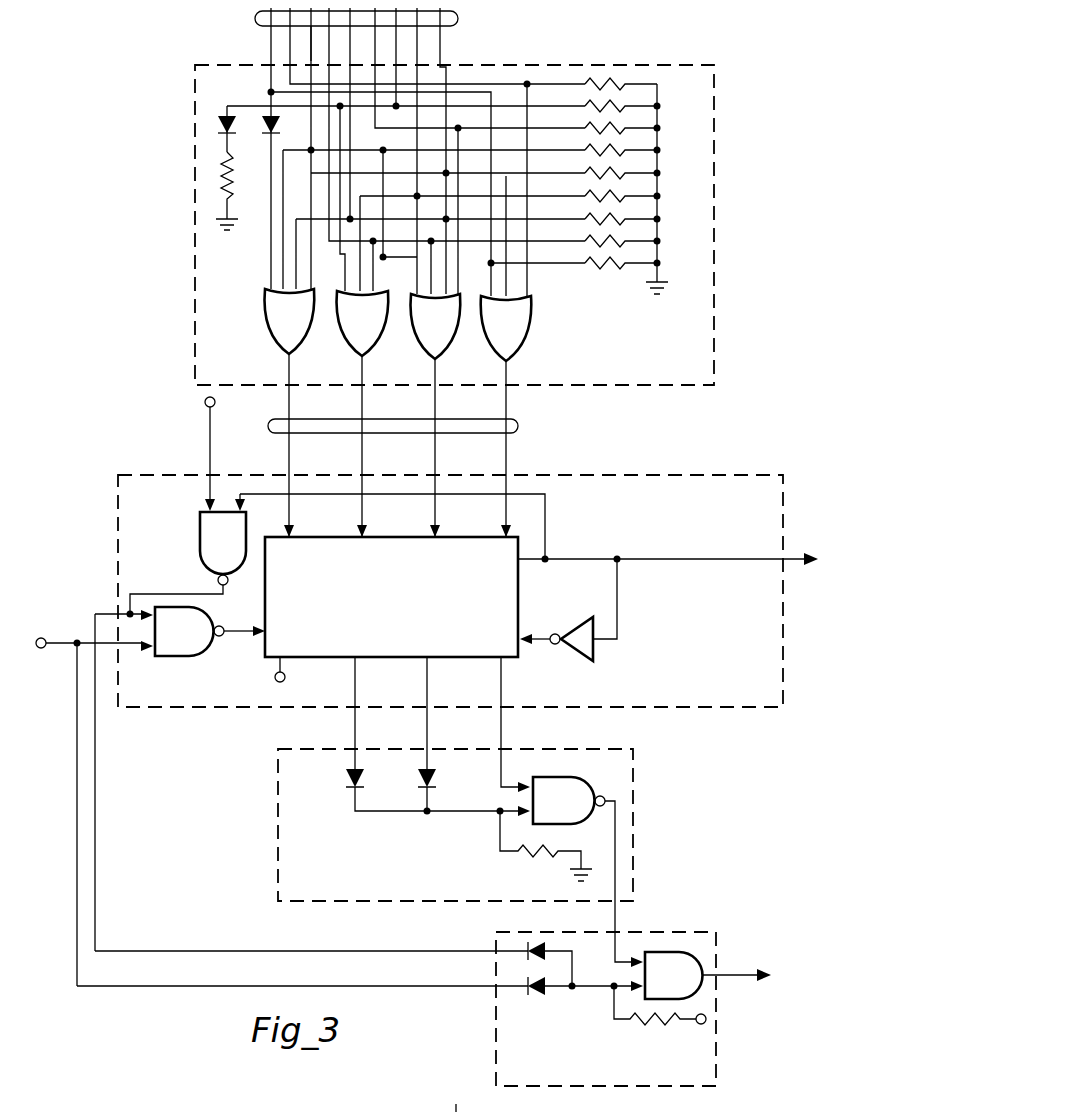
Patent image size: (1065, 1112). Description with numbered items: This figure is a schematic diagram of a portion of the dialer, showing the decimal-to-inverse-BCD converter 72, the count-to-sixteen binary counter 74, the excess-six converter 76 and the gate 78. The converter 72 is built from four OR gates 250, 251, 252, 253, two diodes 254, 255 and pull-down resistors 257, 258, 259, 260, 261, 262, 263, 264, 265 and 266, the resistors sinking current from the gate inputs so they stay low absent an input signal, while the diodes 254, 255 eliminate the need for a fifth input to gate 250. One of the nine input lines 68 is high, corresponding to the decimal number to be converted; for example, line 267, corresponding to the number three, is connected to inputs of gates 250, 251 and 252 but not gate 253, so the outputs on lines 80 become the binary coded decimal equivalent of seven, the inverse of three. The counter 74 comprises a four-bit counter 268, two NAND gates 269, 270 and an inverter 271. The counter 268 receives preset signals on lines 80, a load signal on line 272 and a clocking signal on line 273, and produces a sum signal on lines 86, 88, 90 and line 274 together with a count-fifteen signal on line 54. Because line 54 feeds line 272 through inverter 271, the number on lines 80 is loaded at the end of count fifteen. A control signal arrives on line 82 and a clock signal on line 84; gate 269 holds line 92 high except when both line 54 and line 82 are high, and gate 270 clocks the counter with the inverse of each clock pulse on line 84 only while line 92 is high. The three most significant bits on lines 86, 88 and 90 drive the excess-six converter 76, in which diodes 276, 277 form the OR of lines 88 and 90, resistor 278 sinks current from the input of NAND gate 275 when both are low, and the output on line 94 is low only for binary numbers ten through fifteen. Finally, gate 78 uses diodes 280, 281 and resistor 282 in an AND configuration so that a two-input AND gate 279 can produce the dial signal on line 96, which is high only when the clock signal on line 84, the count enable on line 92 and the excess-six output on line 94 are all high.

The input lines 68 is at (460, 20).
The line 267 is at (310, 46).
The decimal-to-inverse-BCD converter 72 is at (536, 73).
The diode 254 is at (270, 114).
The diode 255 is at (223, 122).
The resistor 266 is at (223, 178).
The resistor 257 is at (594, 88).
The resistor 258 is at (594, 110).
The resistor 259 is at (594, 132).
The resistor 260 is at (594, 154).
The resistor 261 is at (594, 177).
The resistor 262 is at (594, 200).
The resistor 263 is at (594, 223).
The resistor 264 is at (594, 245).
The resistor 265 is at (594, 267).
The OR gate 250 is at (279, 330).
The OR gate 251 is at (352, 332).
The OR gate 252 is at (425, 335).
The OR gate 253 is at (496, 337).
The lines 80 is at (520, 427).
The line 82 is at (212, 411).
The count-to-16 binary counter 74 is at (570, 481).
The NAND gate 269 is at (213, 553).
The 4-bit counter 268 is at (459, 539).
The NAND gate 270 is at (173, 646).
The line 273 is at (238, 630).
The line 274 is at (277, 676).
The line 54 is at (792, 567).
The inverter 271 is at (573, 660).
The line 272 is at (552, 635).
The line 84 is at (76, 782).
The line 92 is at (97, 779).
The line 90 is at (356, 740).
The line 88 is at (429, 740).
The line 86 is at (502, 740).
The excess-6 converter 76 is at (518, 755).
The diode 277 is at (358, 790).
The diode 276 is at (440, 790).
The NAND gate 275 is at (548, 818).
The resistor 278 is at (546, 850).
The line 94 is at (627, 884).
The gate 78 is at (672, 933).
The diode 280 is at (553, 943).
The diode 281 is at (549, 995).
The AND gate 279 is at (660, 992).
The line 96 is at (757, 980).
The resistor 282 is at (639, 1025).